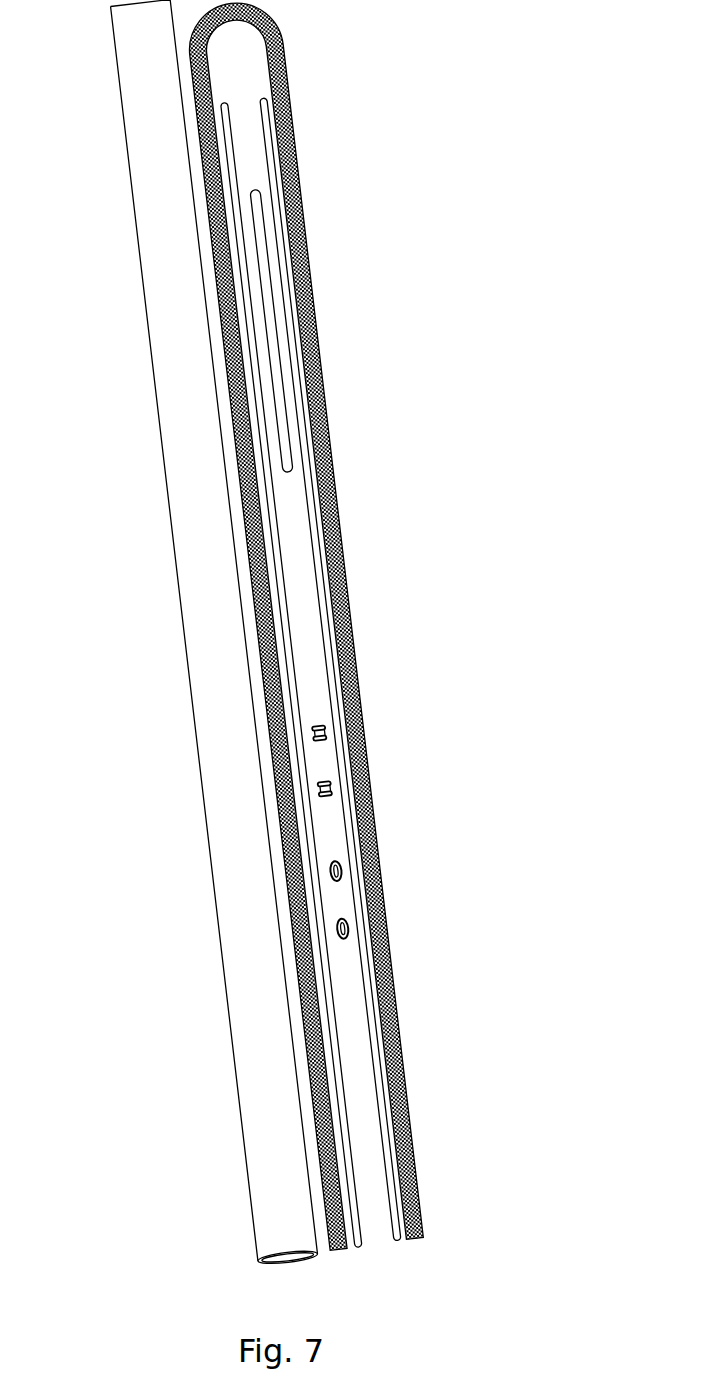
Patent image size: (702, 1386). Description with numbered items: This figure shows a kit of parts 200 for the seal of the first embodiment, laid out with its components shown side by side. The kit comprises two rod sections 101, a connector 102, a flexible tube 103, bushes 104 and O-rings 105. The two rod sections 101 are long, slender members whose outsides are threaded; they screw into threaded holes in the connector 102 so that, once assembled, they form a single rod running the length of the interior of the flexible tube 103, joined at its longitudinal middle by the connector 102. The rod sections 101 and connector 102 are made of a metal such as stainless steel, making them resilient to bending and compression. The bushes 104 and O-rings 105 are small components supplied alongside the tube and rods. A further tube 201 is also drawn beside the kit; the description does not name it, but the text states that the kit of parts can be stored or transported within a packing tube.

The kit of parts 200 is at (455, 191).
The outer tube 201 is at (158, 413).
The rod sections 101 is at (390, 1230).
The connector 102 is at (270, 328).
The flexible tube 103 is at (340, 503).
The bushes 104 is at (327, 733).
The O-rings 105 is at (341, 871).